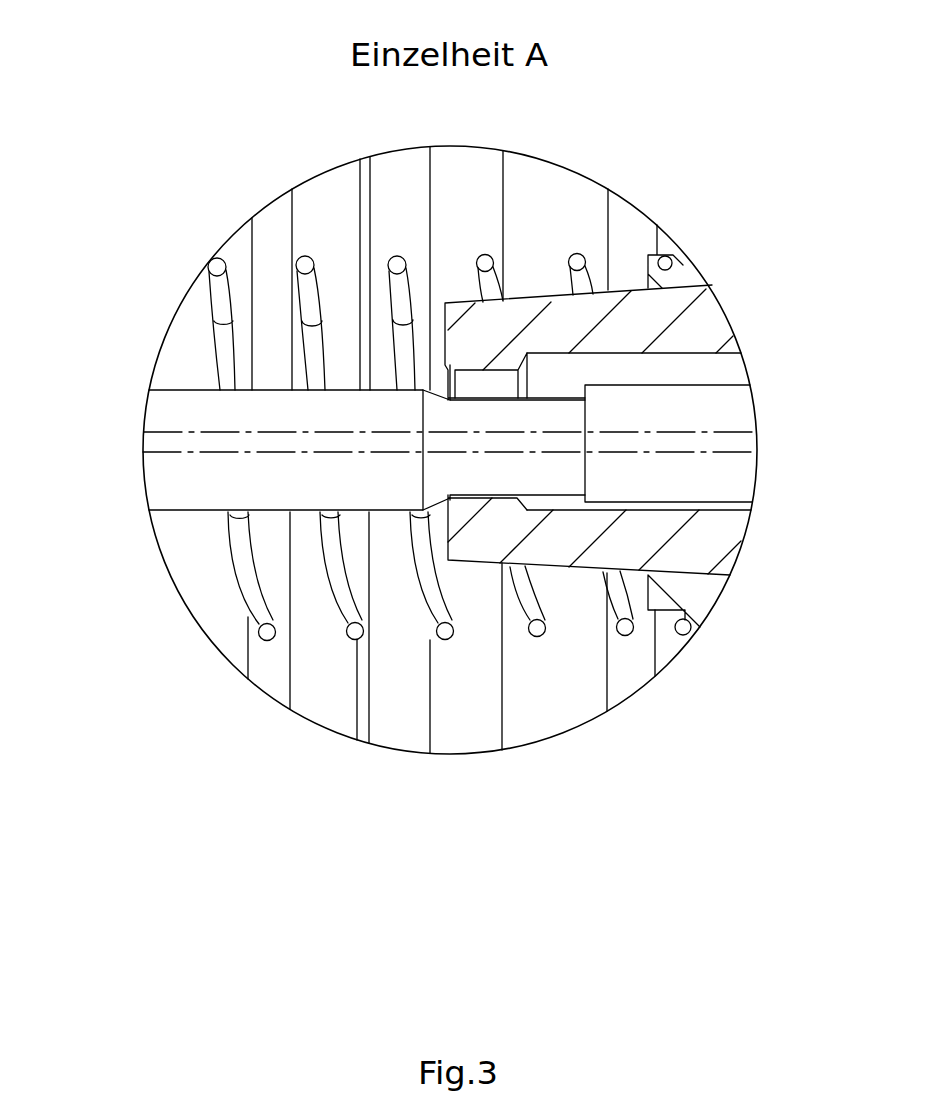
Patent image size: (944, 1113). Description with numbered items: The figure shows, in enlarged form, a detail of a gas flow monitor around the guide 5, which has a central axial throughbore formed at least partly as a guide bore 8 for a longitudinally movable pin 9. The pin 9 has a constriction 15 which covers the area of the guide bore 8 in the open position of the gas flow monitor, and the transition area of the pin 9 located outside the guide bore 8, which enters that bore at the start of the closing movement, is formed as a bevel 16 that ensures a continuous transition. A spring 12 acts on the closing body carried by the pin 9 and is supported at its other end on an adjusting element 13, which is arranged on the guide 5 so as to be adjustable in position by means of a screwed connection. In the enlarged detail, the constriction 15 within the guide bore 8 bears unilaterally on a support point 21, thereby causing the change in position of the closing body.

The guide 5 is at (702, 542).
The guide bore 8 is at (483, 383).
The pin 9 is at (718, 409).
The spring 12 is at (223, 300).
The adjusting element 13 is at (680, 271).
The constriction 15 is at (517, 469).
The bevel 16 is at (437, 442).
The support point 21 is at (423, 509).